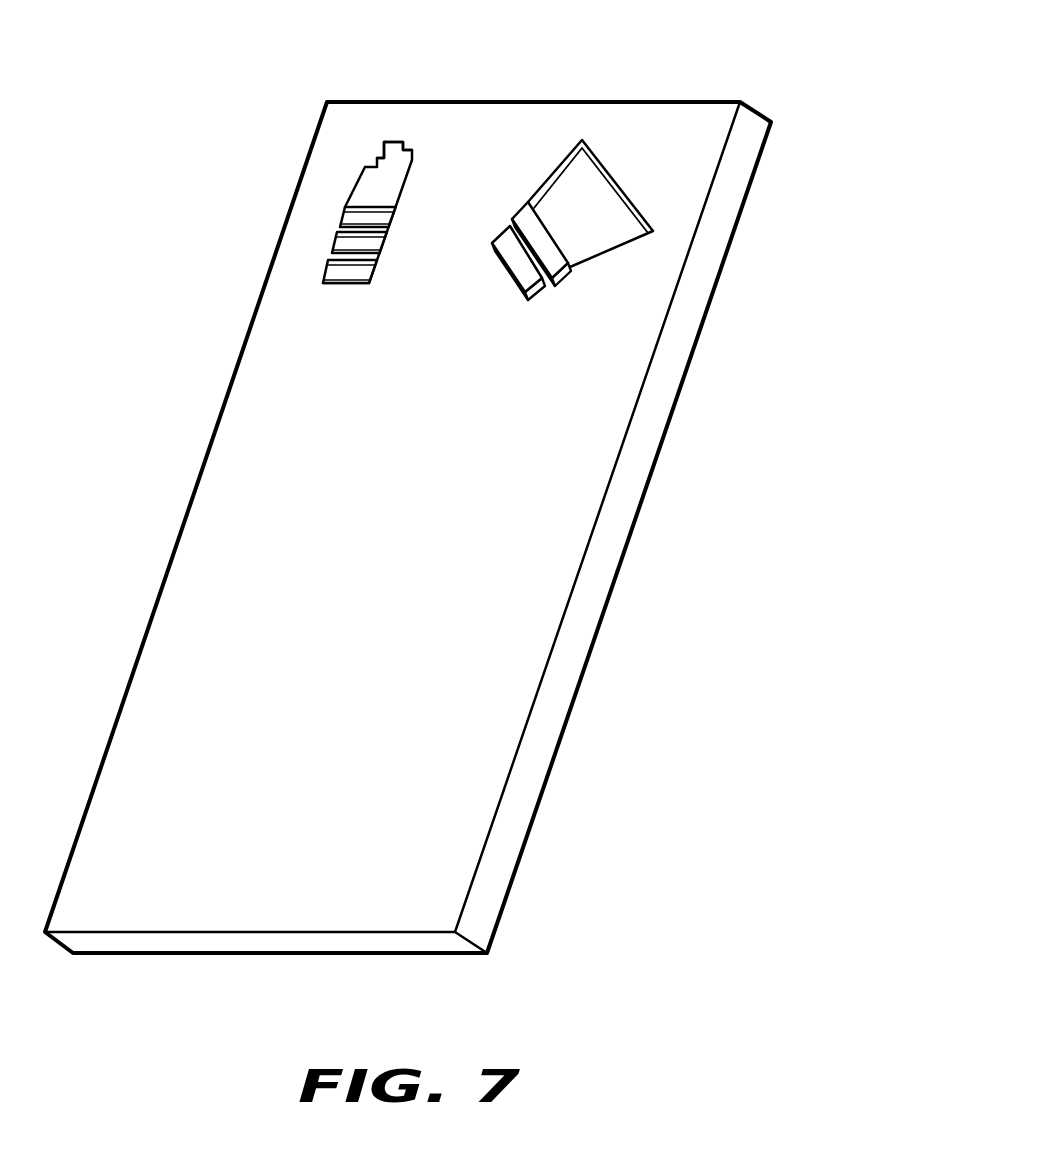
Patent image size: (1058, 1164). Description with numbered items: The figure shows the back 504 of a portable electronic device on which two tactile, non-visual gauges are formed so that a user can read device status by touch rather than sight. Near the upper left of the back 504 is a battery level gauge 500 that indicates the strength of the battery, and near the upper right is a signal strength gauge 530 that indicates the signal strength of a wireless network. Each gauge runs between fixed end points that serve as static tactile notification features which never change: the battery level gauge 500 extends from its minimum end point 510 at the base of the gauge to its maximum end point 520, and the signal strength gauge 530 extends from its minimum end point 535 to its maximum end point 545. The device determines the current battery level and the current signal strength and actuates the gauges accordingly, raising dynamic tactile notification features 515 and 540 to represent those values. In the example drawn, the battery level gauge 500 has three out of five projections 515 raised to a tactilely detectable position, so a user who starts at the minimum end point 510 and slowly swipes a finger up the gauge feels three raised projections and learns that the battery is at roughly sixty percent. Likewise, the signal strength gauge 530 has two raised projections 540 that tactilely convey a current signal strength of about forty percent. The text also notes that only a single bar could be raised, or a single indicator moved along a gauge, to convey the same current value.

The back 504 is at (585, 415).
The battery level gauge 500 is at (372, 192).
The minimum end point 510 is at (325, 267).
The dynamic tactile notification features 515 is at (350, 210).
The maximum end point 520 is at (410, 147).
The signal strength gauge 530 is at (613, 230).
The minimum end point 535 is at (540, 292).
The dynamic tactile notification features 540 is at (562, 268).
The maximum end point 545 is at (612, 174).